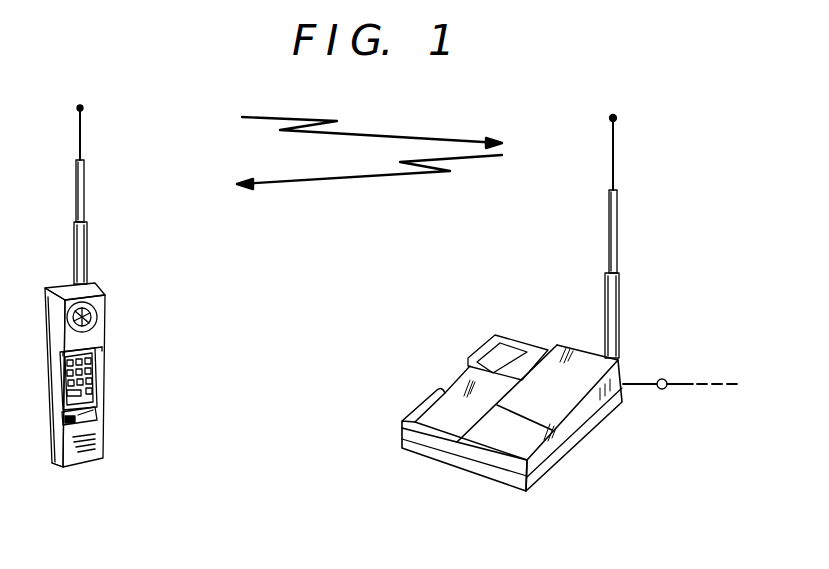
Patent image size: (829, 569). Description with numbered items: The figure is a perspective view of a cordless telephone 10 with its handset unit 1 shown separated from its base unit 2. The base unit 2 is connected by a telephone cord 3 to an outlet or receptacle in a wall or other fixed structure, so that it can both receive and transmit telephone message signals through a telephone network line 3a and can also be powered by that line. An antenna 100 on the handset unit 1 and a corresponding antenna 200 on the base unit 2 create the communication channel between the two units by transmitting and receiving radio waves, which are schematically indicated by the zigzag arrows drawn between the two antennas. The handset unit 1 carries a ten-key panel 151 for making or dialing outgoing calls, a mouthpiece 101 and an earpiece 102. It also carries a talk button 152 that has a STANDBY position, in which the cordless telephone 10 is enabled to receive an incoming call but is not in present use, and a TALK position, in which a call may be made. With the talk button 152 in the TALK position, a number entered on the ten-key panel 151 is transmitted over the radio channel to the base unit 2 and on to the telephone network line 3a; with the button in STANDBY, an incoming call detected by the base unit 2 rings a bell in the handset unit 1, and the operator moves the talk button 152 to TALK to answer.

The handset unit 1 is at (95, 462).
The base unit 2 is at (590, 435).
The telephone cord 3 is at (643, 382).
The telephone network line 3a is at (690, 385).
The cordless telephone 10 is at (256, 400).
The antenna 100 is at (85, 188).
The mouthpiece 101 is at (97, 433).
The earpiece 102 is at (97, 319).
The ten-key panel 151 is at (97, 377).
The talk button 152 is at (70, 427).
The antenna 200 is at (617, 232).